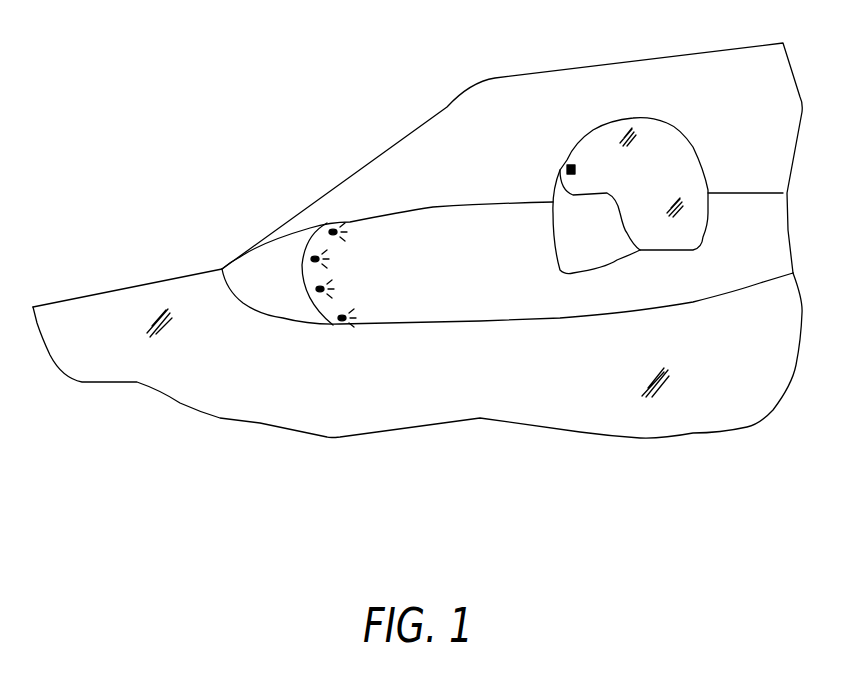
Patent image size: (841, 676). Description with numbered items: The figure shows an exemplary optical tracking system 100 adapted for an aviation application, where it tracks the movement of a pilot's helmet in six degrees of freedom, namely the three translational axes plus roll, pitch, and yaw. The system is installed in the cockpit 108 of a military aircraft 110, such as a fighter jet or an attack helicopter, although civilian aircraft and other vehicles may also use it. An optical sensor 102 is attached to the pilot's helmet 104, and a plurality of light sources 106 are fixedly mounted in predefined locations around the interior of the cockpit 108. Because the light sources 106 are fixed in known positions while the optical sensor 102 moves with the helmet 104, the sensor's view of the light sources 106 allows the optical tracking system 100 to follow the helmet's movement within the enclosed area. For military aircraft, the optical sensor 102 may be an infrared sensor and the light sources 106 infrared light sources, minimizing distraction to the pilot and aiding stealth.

The optical tracking system 100 is at (211, 100).
The optical sensor 102 is at (567, 169).
The pilot's helmet 104 is at (643, 117).
The light sources 106 is at (382, 240).
The cockpit 108 is at (513, 281).
The military aircraft 110 is at (342, 438).